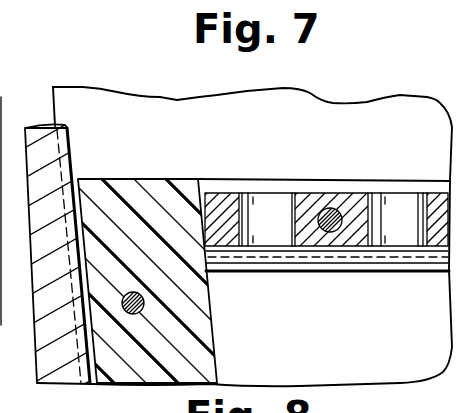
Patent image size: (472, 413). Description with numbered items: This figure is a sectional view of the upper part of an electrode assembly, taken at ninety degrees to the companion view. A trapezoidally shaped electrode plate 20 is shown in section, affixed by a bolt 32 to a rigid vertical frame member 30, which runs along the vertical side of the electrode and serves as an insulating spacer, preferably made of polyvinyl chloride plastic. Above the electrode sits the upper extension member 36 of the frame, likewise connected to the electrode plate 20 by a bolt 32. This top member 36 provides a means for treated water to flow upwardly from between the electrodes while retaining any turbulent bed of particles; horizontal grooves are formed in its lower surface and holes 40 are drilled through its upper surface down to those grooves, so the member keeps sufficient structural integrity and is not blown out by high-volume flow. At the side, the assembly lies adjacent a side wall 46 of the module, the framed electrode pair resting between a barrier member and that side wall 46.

The electrode 20 is at (312, 314).
The frame member 30 is at (128, 179).
The bolt 32 is at (144, 303).
The upper extension member 36 is at (315, 178).
The hole 40 is at (285, 231).
The side wall 46 is at (62, 367).